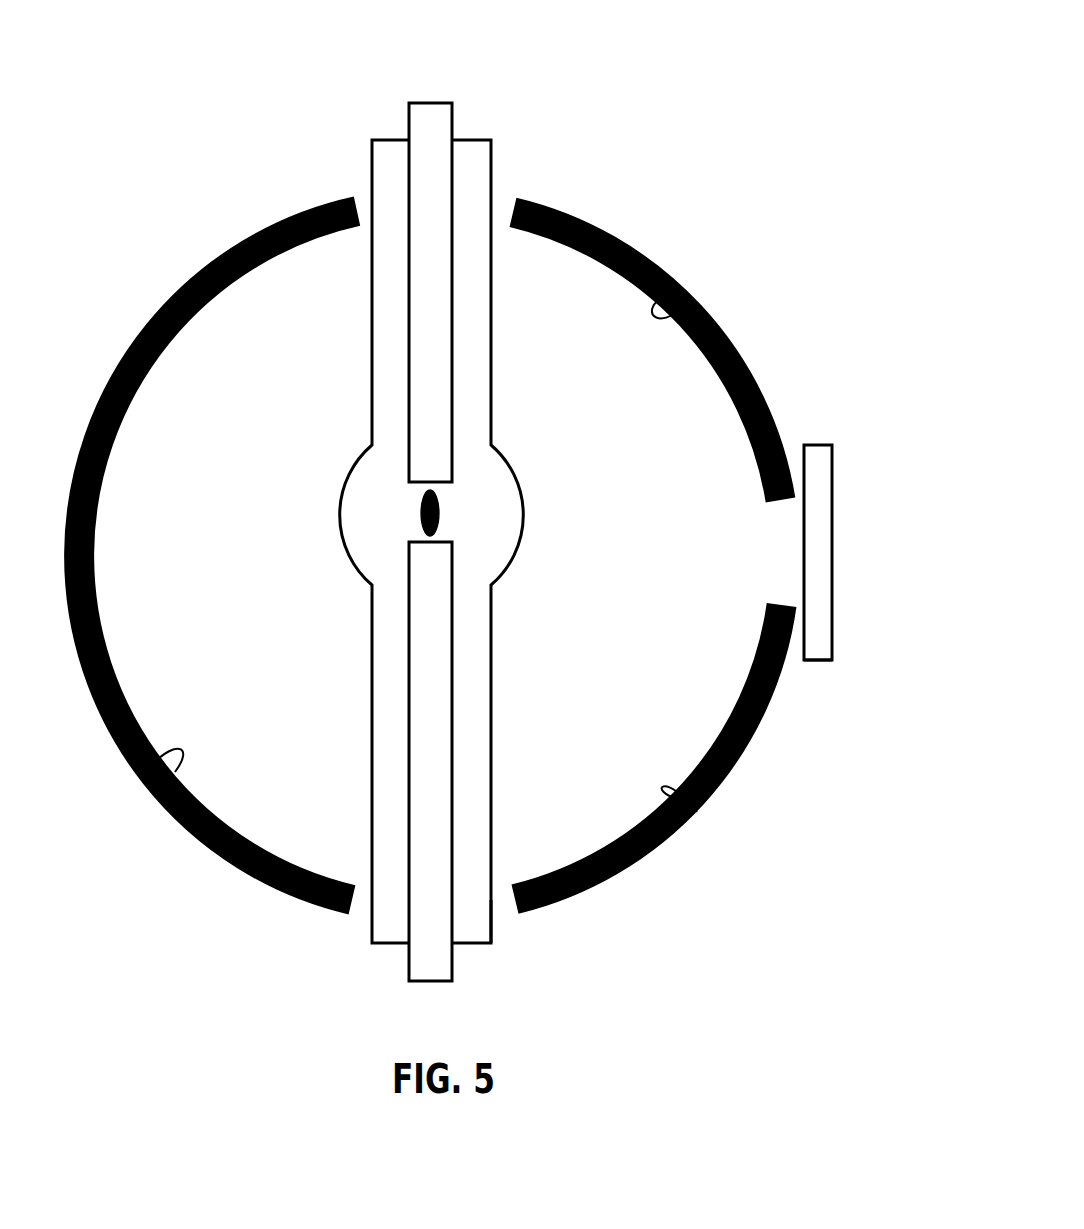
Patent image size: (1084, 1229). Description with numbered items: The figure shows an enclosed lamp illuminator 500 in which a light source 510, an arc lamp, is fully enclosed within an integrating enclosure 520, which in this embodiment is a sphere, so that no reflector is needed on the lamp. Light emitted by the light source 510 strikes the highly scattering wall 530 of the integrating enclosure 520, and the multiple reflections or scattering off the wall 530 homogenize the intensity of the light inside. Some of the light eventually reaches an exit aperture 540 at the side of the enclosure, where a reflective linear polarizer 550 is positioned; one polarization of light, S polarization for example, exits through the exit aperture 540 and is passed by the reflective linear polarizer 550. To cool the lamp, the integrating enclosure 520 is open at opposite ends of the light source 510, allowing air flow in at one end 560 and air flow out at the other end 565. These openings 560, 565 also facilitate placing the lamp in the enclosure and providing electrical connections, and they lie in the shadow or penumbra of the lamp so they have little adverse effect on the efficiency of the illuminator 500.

The enclosed lamp illuminator 500 is at (670, 86).
The light source 510 is at (535, 496).
The integrating enclosure 520 is at (641, 247).
The highly scattering wall 530 is at (690, 297).
The exit aperture 540 is at (790, 552).
The reflective linear polarizer 550 is at (834, 664).
The air flow in opening 560 is at (500, 205).
The air flow out opening 565 is at (508, 913).